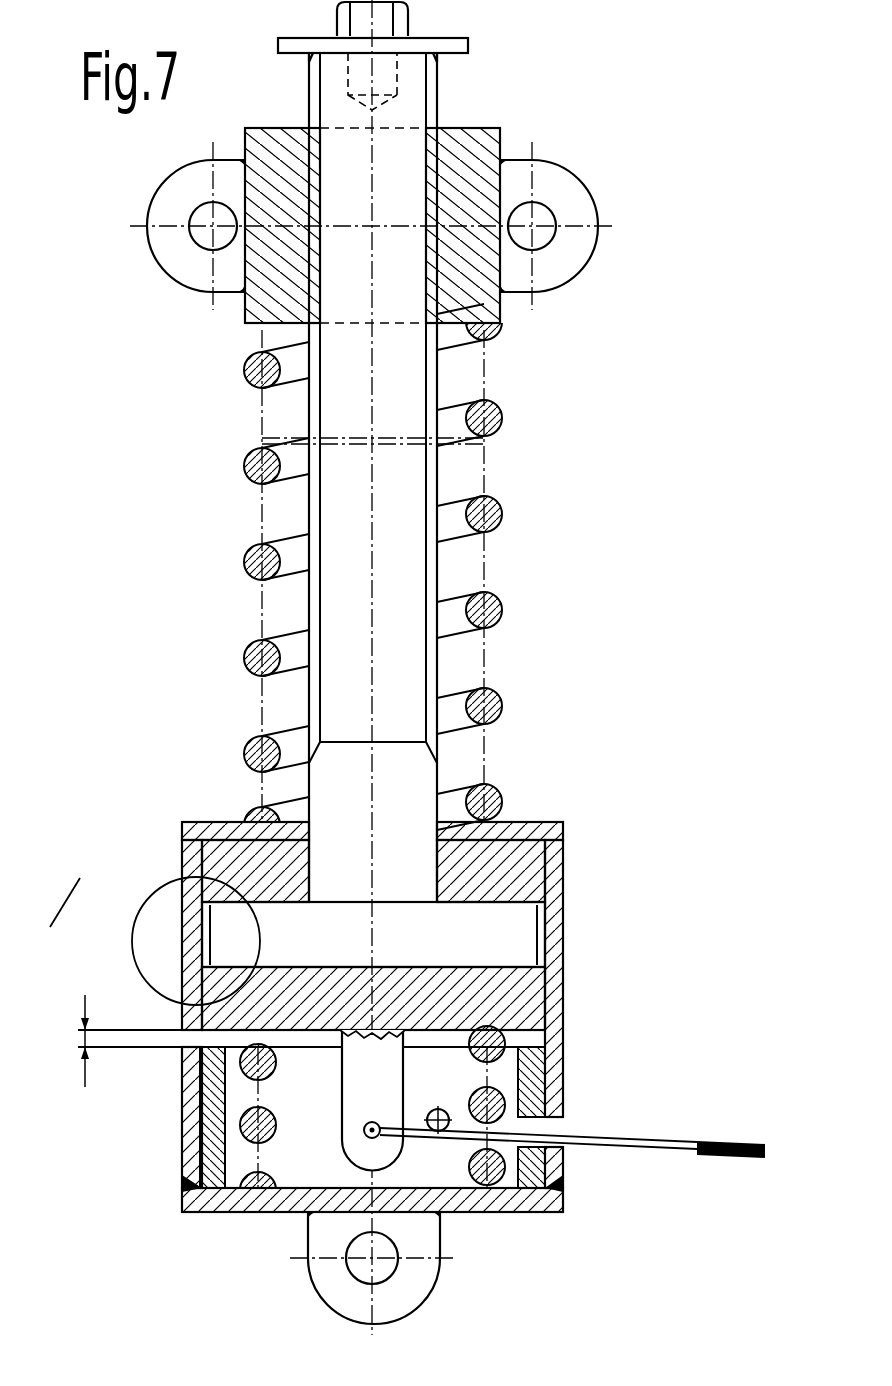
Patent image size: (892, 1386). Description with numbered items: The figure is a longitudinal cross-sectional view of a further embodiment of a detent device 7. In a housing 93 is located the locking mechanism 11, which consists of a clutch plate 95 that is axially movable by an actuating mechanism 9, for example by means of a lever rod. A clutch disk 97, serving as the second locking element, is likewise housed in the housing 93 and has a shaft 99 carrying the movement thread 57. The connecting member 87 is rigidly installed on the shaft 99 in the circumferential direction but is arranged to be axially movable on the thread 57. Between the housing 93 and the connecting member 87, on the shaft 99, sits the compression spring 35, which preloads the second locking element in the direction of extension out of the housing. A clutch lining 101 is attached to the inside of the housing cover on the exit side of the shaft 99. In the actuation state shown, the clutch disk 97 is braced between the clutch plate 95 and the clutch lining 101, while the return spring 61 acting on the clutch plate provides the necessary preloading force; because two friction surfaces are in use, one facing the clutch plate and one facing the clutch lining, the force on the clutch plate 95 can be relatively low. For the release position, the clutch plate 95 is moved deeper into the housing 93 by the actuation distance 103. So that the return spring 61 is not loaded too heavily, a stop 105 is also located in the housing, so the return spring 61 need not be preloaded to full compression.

The detent device 7 is at (54, 928).
The actuating mechanism 9 is at (588, 1128).
The locking mechanism 11 is at (147, 903).
The compression spring 35 is at (501, 513).
The movement thread 57 is at (433, 660).
The return spring 61 is at (240, 1135).
The connecting member 87 is at (560, 262).
The housing 93 is at (557, 947).
The clutch plate 95 is at (527, 1007).
The clutch disk 97 is at (497, 937).
The shaft 99 is at (413, 792).
The clutch lining 101 is at (503, 865).
The actuation distance 103 is at (78, 1040).
The stop 105 is at (200, 1122).